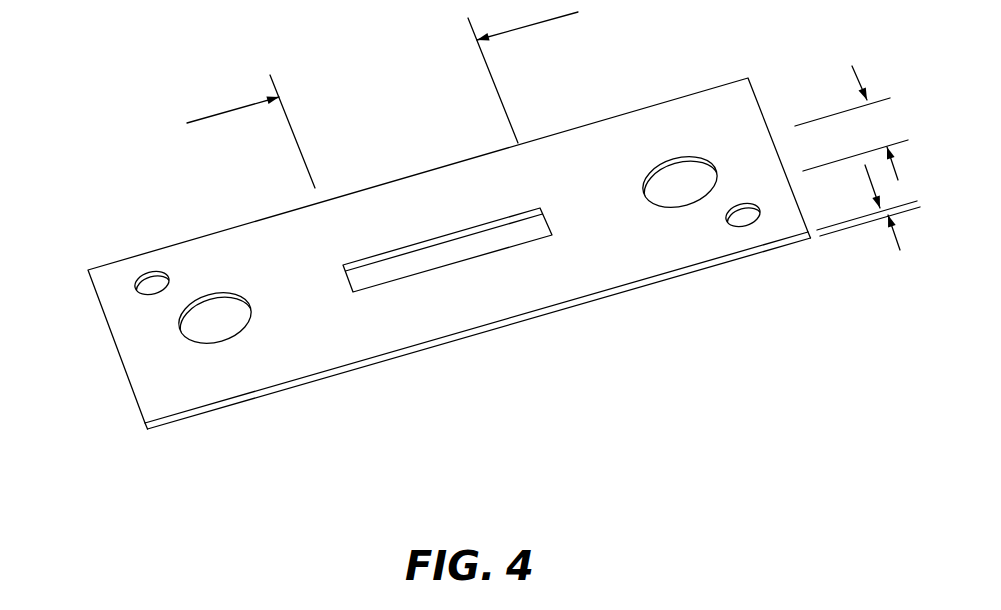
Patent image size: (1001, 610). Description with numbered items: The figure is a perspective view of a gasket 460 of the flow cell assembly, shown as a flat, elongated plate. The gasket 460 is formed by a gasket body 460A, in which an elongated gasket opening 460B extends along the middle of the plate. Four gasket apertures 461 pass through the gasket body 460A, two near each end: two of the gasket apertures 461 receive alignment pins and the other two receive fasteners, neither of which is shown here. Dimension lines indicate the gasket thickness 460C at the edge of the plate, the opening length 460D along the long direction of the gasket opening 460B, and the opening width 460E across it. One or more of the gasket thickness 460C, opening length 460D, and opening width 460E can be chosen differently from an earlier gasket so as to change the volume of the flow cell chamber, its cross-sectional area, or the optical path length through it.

The gasket 460 is at (436, 263).
The gasket body 460A is at (156, 397).
The gasket opening 460B is at (456, 260).
The gasket thickness 460C is at (872, 223).
The opening length 460D is at (382, 100).
The opening width 460E is at (851, 111).
The gasket apertures 461 is at (150, 283).